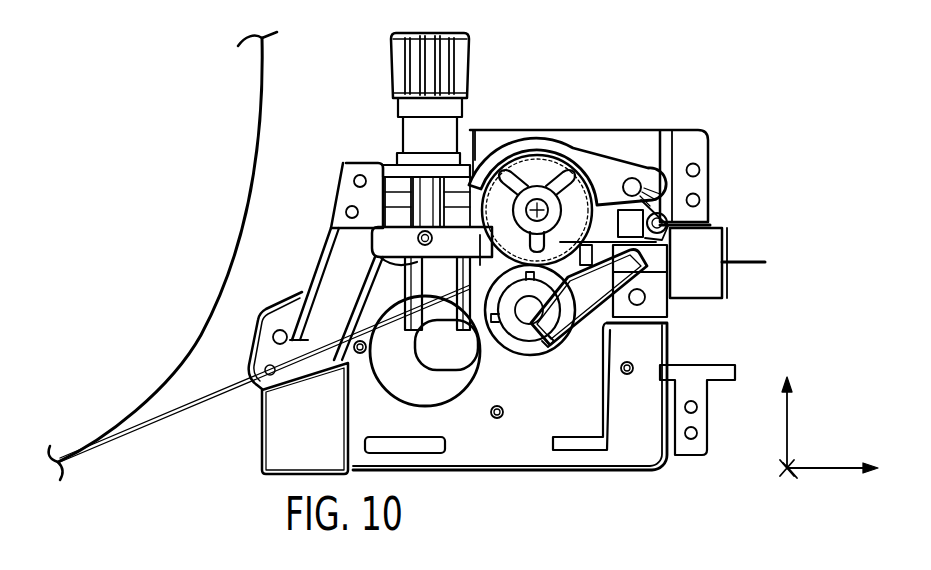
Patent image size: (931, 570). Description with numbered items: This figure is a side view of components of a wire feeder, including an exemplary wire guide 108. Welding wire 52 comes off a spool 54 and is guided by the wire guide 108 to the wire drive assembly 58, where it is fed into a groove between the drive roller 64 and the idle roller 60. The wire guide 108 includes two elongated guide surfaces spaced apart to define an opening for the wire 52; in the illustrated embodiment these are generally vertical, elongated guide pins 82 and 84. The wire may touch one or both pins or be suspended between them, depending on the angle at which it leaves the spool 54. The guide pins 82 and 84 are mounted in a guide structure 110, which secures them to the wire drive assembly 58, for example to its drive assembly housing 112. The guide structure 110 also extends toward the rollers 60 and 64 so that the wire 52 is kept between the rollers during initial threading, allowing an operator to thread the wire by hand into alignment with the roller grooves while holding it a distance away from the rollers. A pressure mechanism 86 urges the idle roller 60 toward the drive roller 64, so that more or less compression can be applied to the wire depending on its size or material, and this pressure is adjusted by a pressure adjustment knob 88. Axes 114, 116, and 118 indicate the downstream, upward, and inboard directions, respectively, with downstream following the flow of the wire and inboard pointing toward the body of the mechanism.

The wire 52 is at (178, 408).
The spool 54 is at (165, 297).
The wire drive assembly 58 is at (730, 118).
The idle roller 60 is at (528, 170).
The drive roller 64 is at (533, 352).
The guide pin 82 is at (410, 283).
The guide pin 84 is at (470, 393).
The pressure mechanism 86 is at (584, 160).
The pressure adjustment knob 88 is at (460, 36).
The wire guide 108 is at (351, 253).
The guide structure 110 is at (385, 240).
The drive assembly housing 112 is at (634, 453).
The downstream direction axis 114 is at (825, 468).
The upward direction axis 116 is at (787, 430).
The inboard direction axis 118 is at (790, 472).